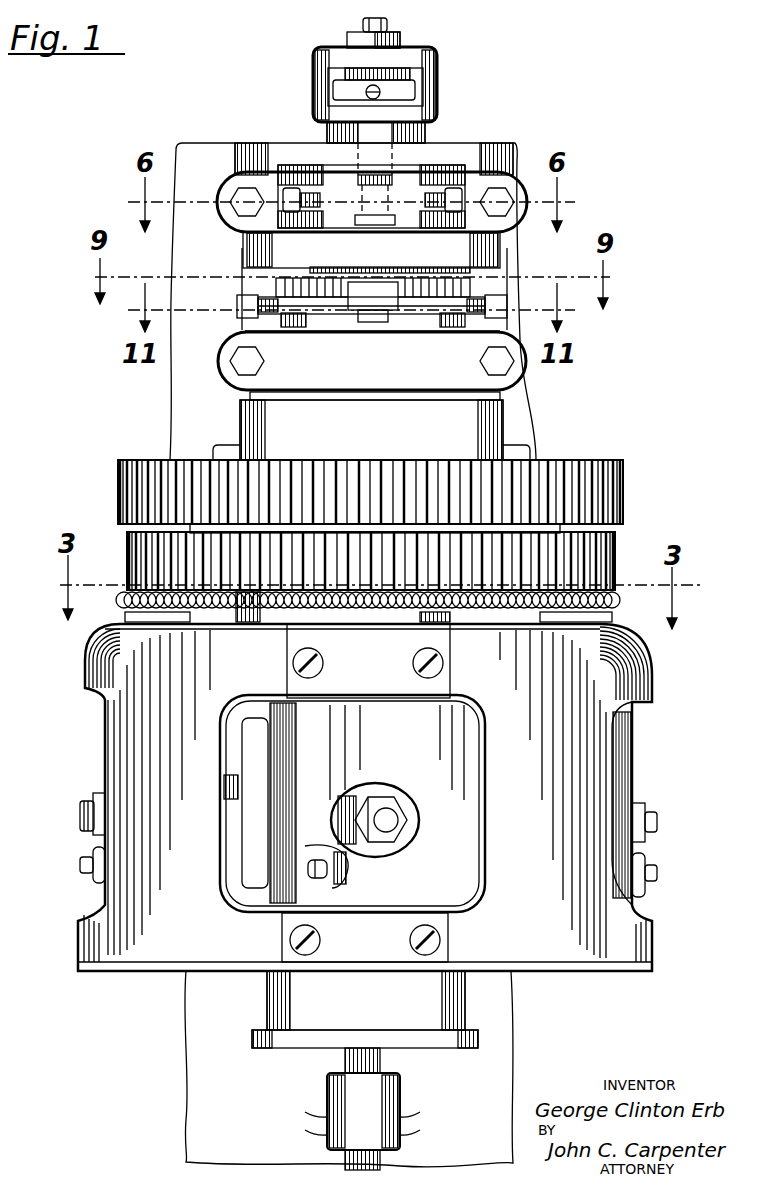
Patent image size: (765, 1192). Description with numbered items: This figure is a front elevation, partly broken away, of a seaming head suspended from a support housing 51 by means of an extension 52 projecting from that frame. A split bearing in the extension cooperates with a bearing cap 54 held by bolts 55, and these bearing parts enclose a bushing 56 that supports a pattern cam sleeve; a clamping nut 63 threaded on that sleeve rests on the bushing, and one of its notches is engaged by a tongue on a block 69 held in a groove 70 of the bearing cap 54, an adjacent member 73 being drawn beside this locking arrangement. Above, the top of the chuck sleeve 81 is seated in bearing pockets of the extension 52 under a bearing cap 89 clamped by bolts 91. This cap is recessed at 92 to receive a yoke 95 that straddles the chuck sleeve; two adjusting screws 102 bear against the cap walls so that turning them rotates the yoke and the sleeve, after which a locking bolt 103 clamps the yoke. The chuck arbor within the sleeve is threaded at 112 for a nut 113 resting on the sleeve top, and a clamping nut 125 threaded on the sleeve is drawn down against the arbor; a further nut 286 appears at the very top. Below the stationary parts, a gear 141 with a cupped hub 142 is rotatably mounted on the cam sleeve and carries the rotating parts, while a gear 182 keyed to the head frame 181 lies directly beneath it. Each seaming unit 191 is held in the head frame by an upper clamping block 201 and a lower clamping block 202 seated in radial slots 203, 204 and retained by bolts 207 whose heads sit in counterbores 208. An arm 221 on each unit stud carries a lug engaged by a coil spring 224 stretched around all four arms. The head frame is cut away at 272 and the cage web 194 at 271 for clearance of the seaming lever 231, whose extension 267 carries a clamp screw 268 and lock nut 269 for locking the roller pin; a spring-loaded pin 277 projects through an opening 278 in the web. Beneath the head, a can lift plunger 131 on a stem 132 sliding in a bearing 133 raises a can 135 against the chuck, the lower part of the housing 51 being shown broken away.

The nut 286 is at (388, 25).
The clamping nut 125 is at (433, 66).
The thread 112 is at (346, 78).
The nut 113 is at (337, 95).
The chuck sleeve 81 is at (340, 140).
The locking bolt 103 is at (425, 138).
The recess 92 is at (447, 180).
The extension 52 is at (206, 156).
The support housing 51 is at (533, 406).
The bolts 91 is at (507, 203).
The adjusting screws 102 is at (286, 212).
The yoke 95 is at (340, 217).
The bearing cap 89 is at (374, 281).
The feed rod 73 is at (240, 314).
The block 69 is at (373, 296).
The clamping nut 63 is at (322, 292).
The groove 70 is at (370, 318).
The bearing cap 54 is at (372, 334).
The bushing 56 is at (447, 306).
The bolts 55 is at (247, 362).
The cupped hub 142 is at (490, 431).
The gear 141 is at (623, 477).
The gear 182 is at (606, 562).
The coil spring 224 is at (122, 601).
The arm 221 is at (206, 618).
The head frame 181 is at (120, 700).
The cut-away 272 is at (645, 705).
The upper clamping block 201 is at (368, 661).
The radial slot 203 is at (453, 676).
The lower clamping block 202 is at (365, 938).
The radial slot 204 is at (452, 936).
The bolts 207 is at (316, 668).
The counterbore 208 is at (318, 655).
The seaming unit 191 is at (270, 822).
The cage web 194 is at (452, 840).
The seaming lever 231 is at (343, 806).
The cut-away 271 is at (412, 808).
The extension 267 is at (369, 800).
The clamp screw 268 is at (389, 822).
The lock nut 269 is at (395, 806).
The pin 277 is at (90, 872).
The opening 278 is at (327, 868).
The can 135 is at (366, 1000).
The can lift plunger 131 is at (463, 1048).
The stem 132 is at (381, 1061).
The bearing 133 is at (400, 1103).